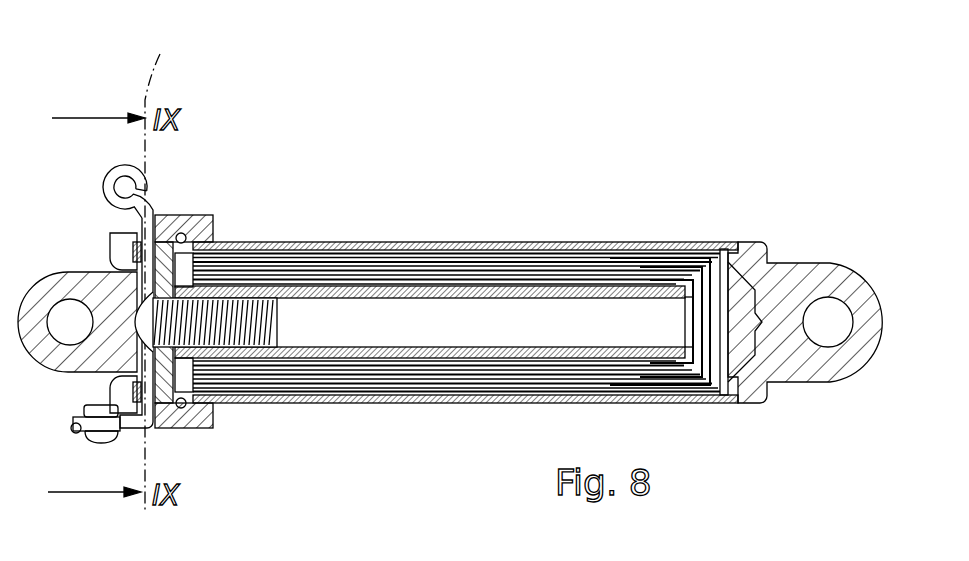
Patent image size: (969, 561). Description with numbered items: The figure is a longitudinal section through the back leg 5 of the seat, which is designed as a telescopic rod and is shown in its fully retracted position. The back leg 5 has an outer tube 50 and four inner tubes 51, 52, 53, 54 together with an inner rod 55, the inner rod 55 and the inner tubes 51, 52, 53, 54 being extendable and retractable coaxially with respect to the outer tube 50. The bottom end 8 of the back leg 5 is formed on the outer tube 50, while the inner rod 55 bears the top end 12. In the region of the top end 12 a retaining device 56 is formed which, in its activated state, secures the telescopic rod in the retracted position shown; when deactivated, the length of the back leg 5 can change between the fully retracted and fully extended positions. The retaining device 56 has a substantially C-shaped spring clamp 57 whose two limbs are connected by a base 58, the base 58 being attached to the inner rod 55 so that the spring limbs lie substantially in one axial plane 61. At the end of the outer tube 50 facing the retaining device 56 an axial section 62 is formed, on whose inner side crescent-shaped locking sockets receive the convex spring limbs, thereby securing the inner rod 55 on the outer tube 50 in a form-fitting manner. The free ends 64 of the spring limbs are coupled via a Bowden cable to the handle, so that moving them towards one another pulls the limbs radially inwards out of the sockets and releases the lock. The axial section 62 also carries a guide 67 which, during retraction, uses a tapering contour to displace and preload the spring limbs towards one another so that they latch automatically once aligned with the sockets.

The back leg 5 is at (392, 180).
The bottom end 8 is at (792, 257).
The top end 12 is at (68, 283).
The outer tube 50 is at (702, 245).
The inner tube 51 is at (480, 245).
The inner tube 52 is at (522, 253).
The inner tube 53 is at (550, 257).
The inner tube 54 is at (593, 257).
The inner rod 55 is at (643, 257).
The retaining device 56 is at (190, 448).
The spring clamp 57 is at (148, 212).
The base 58 is at (73, 430).
The axial plane 61 is at (167, 42).
The axial section 62 is at (210, 424).
The free ends 64 is at (107, 178).
The guide 67 is at (110, 262).